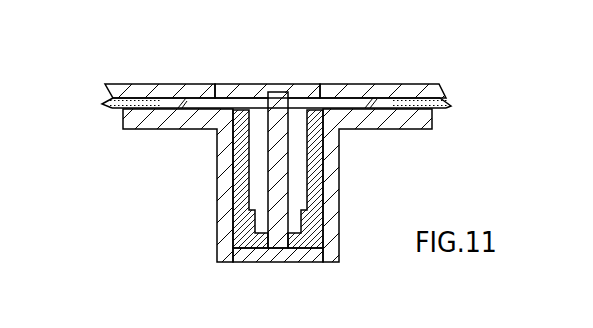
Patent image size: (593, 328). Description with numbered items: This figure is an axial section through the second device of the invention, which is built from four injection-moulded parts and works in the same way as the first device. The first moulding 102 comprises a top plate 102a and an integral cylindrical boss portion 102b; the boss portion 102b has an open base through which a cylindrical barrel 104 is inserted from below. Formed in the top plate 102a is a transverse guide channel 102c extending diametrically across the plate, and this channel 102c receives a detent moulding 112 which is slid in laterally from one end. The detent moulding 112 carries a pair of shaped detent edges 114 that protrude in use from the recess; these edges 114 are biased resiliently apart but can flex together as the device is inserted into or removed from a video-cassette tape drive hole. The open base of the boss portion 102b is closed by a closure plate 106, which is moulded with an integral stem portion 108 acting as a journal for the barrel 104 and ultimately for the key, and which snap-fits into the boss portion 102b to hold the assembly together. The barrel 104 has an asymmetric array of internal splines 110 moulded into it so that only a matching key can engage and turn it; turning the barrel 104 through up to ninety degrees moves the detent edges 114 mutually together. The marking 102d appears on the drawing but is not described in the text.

The first moulding 102 is at (287, 210).
The top plate 102a is at (133, 83).
The cylindrical boss portion 102b is at (330, 190).
The transverse guide channel 102c is at (343, 84).
The housing plate portion 102d is at (260, 83).
The cylindrical barrel 104 is at (242, 198).
The closure plate 106 is at (238, 258).
The stem portion 108 is at (278, 165).
The internal splines 110 is at (312, 228).
The detent moulding 112 is at (437, 83).
The detent edges 114 is at (98, 107).